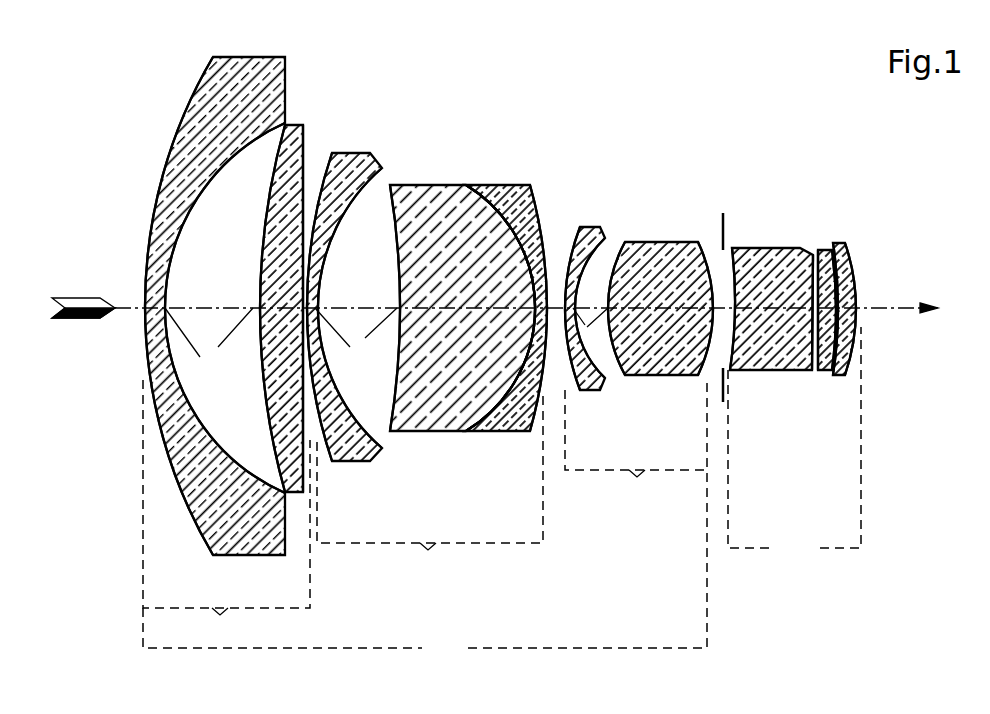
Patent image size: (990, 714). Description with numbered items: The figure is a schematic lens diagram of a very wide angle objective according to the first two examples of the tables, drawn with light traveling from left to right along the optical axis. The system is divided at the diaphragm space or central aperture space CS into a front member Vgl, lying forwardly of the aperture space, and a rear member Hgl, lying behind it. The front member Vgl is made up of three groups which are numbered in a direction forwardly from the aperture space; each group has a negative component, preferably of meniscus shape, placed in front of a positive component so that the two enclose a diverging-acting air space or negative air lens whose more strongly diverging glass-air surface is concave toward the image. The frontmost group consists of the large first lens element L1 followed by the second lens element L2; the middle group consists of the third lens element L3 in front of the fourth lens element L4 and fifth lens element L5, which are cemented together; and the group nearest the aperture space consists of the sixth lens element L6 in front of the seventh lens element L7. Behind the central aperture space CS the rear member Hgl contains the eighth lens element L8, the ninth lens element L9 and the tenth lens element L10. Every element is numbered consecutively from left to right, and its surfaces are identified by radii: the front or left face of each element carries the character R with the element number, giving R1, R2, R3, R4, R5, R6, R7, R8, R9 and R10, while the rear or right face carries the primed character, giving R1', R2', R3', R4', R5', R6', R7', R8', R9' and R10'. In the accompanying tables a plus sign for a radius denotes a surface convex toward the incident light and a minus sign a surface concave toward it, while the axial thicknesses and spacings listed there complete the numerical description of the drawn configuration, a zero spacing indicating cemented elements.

The first lens element L1 is at (210, 538).
The second lens element L2 is at (293, 492).
The third lens element L3 is at (355, 445).
The fourth lens element L4 is at (438, 418).
The fifth lens element L5 is at (512, 418).
The sixth lens element L6 is at (590, 383).
The seventh lens element L7 is at (663, 367).
The eighth lens element L8 is at (752, 362).
The ninth lens element L9 is at (822, 368).
The tenth lens element L10 is at (838, 375).
The radius of curvature of front face of first lens element R1 is at (179, 306).
The radius of curvature of rear face of first lens element R1' is at (225, 308).
The radius of curvature of front face of second lens element R2 is at (247, 308).
The radius of curvature of rear face of second lens element R2' is at (311, 271).
The radius of curvature of front face of third lens element R3 is at (329, 276).
The radius of curvature of rear face of third lens element R3' is at (350, 308).
The radius of curvature of front face of fourth lens element R4 is at (383, 308).
The radius of curvature of rear face of fourth lens element R4' is at (476, 274).
The radius of curvature of front face of fifth lens element R5 is at (500, 273).
The radius of curvature of rear face of fifth lens element R5' is at (532, 280).
The radius of curvature of front face of sixth lens element R6 is at (567, 285).
The radius of curvature of rear face of sixth lens element R6' is at (590, 259).
The radius of curvature of front face of seventh lens element R7 is at (621, 278).
The radius of curvature of rear face of seventh lens element R7' is at (690, 276).
The radius of curvature of front face of eighth lens element R8 is at (717, 255).
The radius of curvature of rear face of eighth lens element R8' is at (781, 280).
The radius of curvature of front face of ninth lens element R9 is at (801, 269).
The radius of curvature of rear face of ninth lens element R9' is at (836, 257).
The radius of curvature of front face of tenth lens element R10 is at (870, 282).
The radius of curvature of rear face of tenth lens element R10' is at (885, 307).
The central aperture space CS is at (716, 350).
The front member Vgl is at (425, 565).
The rear member Hgl is at (794, 444).